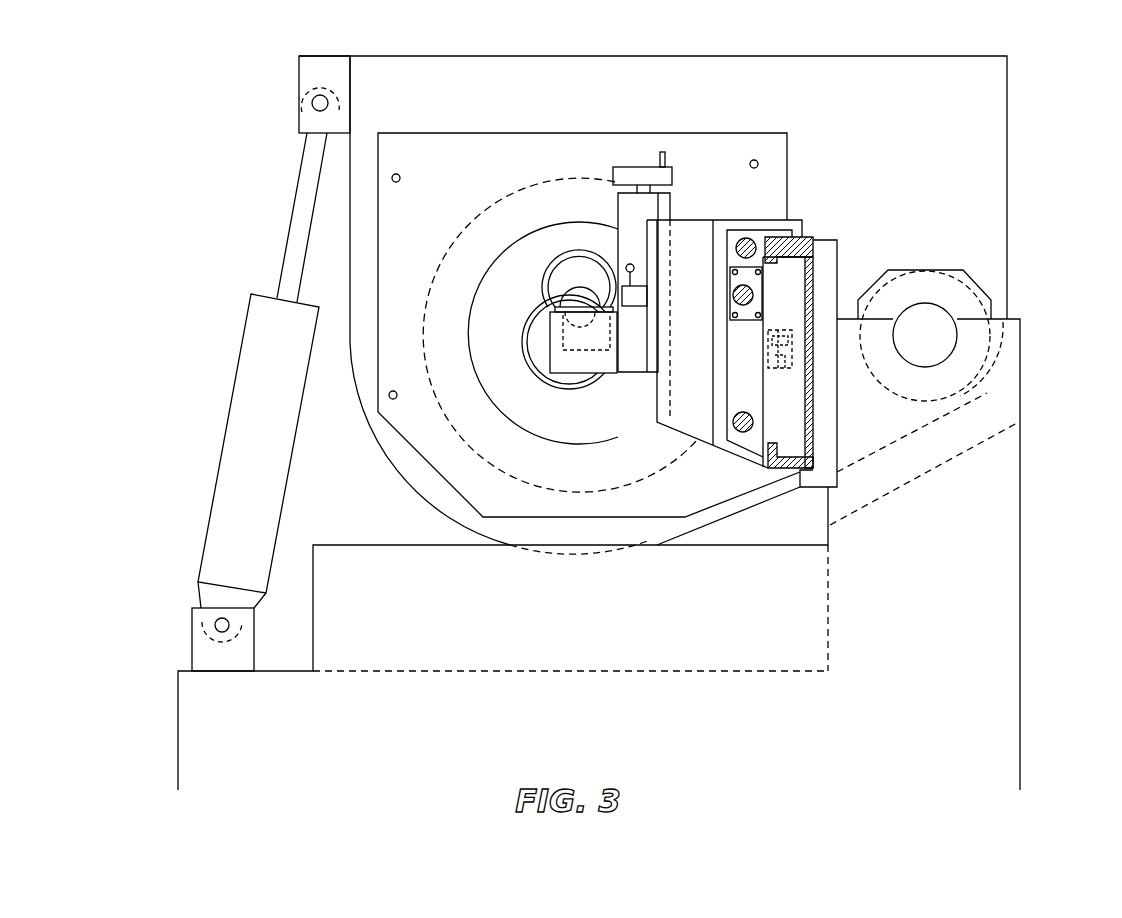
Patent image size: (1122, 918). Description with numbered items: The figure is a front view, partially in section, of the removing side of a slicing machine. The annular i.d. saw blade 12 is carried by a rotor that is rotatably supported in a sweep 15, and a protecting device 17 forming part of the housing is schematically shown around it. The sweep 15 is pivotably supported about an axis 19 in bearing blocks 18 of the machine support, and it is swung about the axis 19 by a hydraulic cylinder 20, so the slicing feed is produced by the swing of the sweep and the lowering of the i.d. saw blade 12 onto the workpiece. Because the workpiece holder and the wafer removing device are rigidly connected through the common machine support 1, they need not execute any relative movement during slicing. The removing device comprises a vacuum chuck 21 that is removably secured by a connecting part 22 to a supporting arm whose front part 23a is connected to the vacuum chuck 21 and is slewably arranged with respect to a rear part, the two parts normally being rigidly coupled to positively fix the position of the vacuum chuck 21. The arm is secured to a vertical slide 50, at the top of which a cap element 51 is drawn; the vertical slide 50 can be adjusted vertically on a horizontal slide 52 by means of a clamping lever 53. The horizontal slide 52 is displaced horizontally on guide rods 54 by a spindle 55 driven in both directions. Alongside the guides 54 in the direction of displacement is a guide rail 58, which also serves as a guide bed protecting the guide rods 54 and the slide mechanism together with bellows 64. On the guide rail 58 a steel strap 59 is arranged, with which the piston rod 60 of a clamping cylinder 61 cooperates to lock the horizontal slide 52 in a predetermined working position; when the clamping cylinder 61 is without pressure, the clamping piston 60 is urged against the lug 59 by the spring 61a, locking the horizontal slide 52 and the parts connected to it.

The machine support 1 is at (1022, 665).
The i.d. saw blade 12 is at (510, 285).
The sweep 15 is at (992, 183).
The protecting device 17 is at (435, 316).
The bearing blocks 18 is at (1012, 370).
The axis 19 is at (923, 320).
The hydraulic cylinder 20 is at (238, 437).
The vacuum chuck 21 is at (573, 243).
The connecting part 22 is at (573, 300).
The front part of supporting arm 23a is at (577, 363).
The vertical slide 50 is at (647, 210).
The top cap 51 is at (632, 175).
The horizontal slide 52 is at (700, 232).
The clamping lever 53 is at (635, 295).
The guide rods 54 is at (750, 247).
The spindle 55 is at (753, 295).
The guide rail 58 is at (836, 248).
The steel strap 59 is at (782, 380).
The piston rod 60 is at (745, 392).
The clamping cylinder 61 is at (768, 343).
The spring 61a is at (778, 330).
The bellows 64 is at (720, 297).